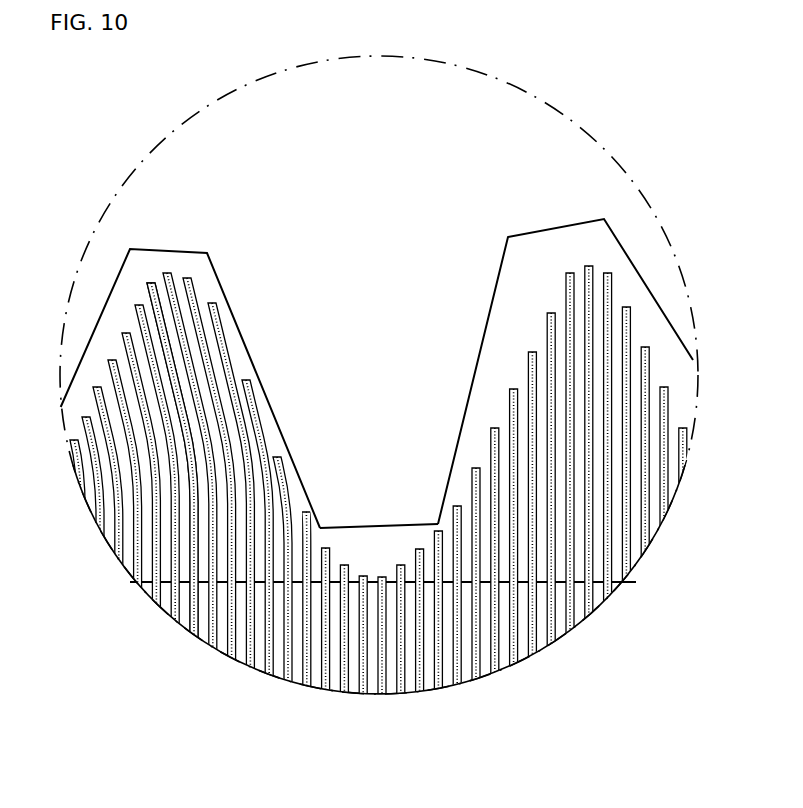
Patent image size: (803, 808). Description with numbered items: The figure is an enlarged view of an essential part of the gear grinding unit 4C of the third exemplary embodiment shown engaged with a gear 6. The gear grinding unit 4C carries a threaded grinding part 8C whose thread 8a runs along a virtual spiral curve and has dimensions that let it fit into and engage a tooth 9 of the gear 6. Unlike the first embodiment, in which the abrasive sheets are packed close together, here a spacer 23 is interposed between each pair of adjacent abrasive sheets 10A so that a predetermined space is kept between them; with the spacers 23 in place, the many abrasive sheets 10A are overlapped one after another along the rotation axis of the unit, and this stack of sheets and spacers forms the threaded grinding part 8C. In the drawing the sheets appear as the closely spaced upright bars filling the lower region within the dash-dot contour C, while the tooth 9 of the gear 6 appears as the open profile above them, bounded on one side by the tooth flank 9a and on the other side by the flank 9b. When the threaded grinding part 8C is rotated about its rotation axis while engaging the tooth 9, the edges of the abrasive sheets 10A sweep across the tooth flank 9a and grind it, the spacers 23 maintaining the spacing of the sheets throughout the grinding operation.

The gear 6 is at (379, 363).
The center axis circle C is at (379, 367).
The threaded grinding part 8C is at (174, 403).
The thread 8a is at (172, 501).
The gear grinding unit 4C is at (596, 403).
The abrasive sheet 10A is at (204, 463).
The tooth 9 is at (377, 373).
The tooth flank 9a is at (190, 388).
The side wall of recess 9b is at (565, 371).
The spacer 23 is at (383, 613).